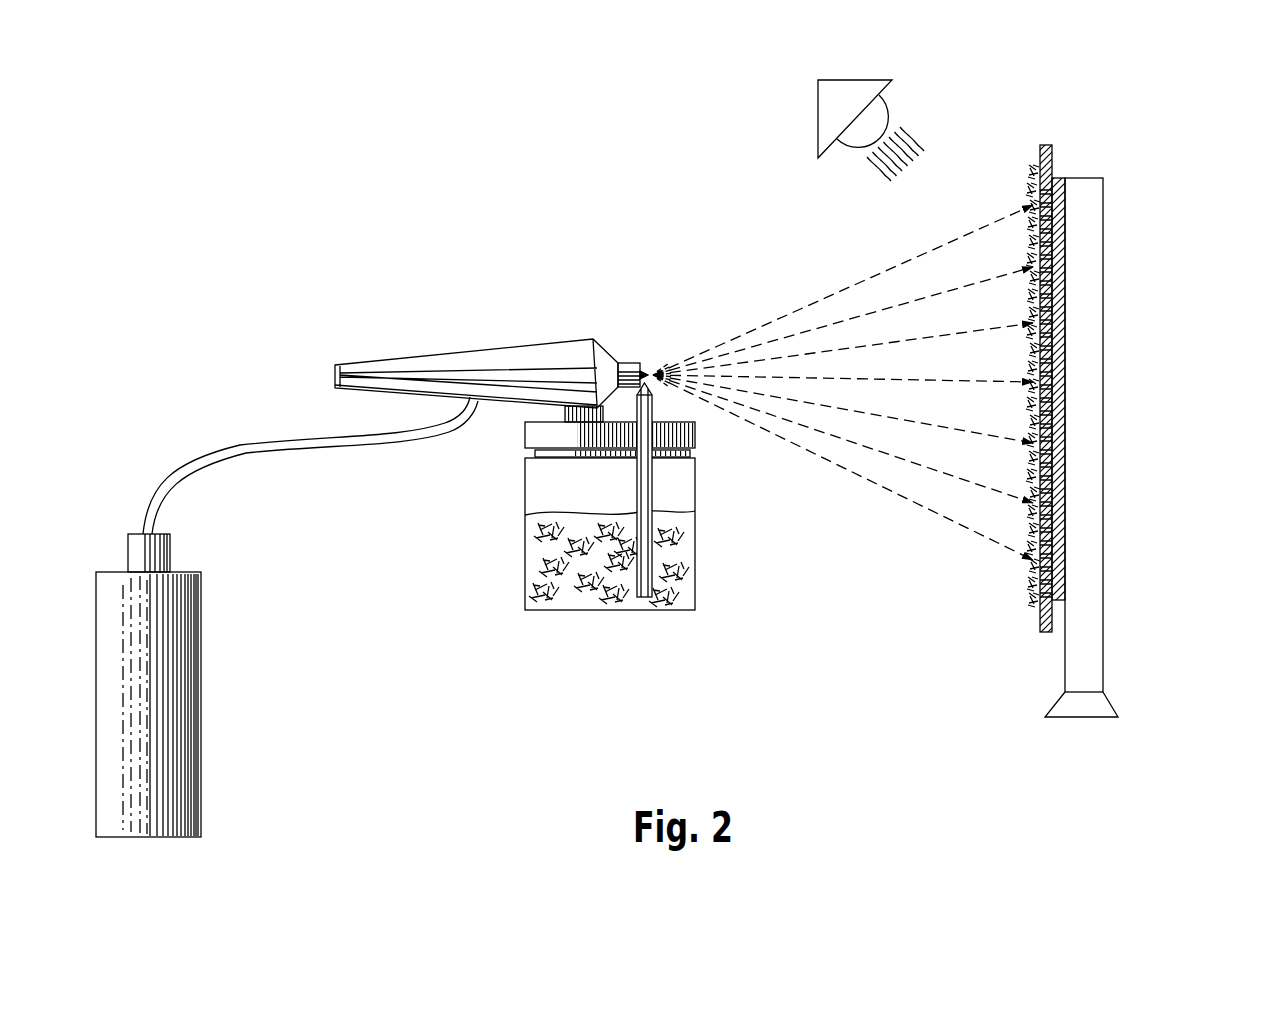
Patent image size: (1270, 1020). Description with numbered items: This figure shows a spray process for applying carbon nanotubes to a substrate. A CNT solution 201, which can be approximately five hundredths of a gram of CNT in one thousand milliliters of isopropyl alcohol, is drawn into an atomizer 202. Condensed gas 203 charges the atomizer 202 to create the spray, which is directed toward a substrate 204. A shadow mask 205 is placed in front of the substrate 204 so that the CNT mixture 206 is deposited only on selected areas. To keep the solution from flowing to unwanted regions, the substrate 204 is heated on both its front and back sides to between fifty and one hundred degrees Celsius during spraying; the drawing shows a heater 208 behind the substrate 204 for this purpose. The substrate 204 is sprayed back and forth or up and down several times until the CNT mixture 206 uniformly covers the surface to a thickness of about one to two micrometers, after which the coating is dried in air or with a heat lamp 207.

The CNT solution 201 is at (683, 568).
The atomizer 202 is at (590, 340).
The condensed gas 203 is at (198, 707).
The substrate 204 is at (1058, 178).
The shadow mask 205 is at (1040, 618).
The CNT mixture 206 is at (1036, 170).
The heat lamp 207 is at (882, 79).
The heater 208 is at (1104, 274).